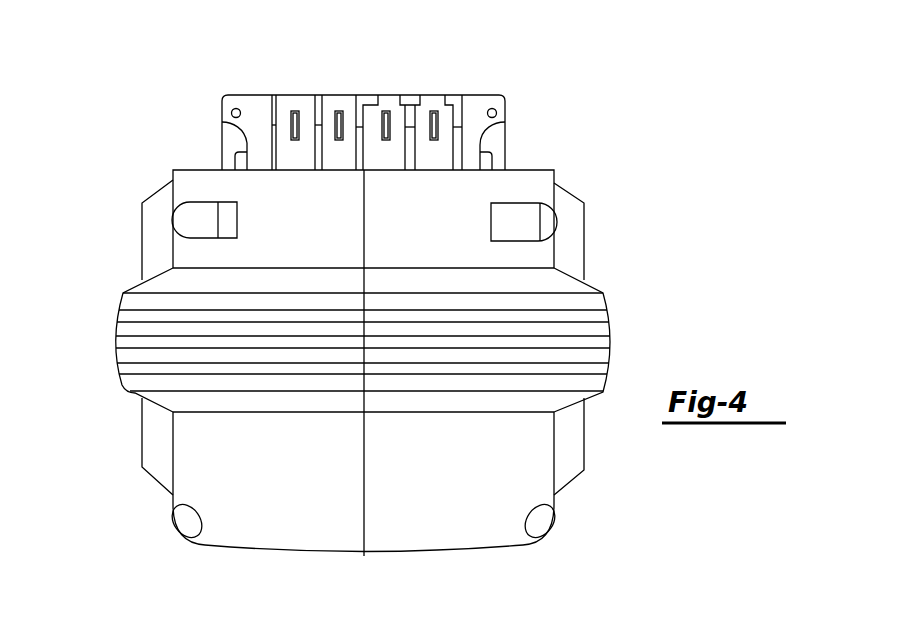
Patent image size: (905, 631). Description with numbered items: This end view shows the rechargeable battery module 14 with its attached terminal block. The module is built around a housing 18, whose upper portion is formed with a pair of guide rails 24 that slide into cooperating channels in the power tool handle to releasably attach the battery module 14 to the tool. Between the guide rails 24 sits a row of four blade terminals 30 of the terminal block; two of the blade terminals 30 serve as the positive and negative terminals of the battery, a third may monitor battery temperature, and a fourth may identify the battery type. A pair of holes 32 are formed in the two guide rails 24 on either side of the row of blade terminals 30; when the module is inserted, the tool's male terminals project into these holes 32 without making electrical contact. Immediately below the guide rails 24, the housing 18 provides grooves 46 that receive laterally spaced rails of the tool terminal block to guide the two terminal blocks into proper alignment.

The rechargeable battery module 14 is at (257, 546).
The housing 18 is at (134, 355).
The guide rails 24 is at (226, 96).
The blade terminals 30 is at (339, 141).
The holes 32 is at (240, 109).
The grooves 46 is at (247, 144).